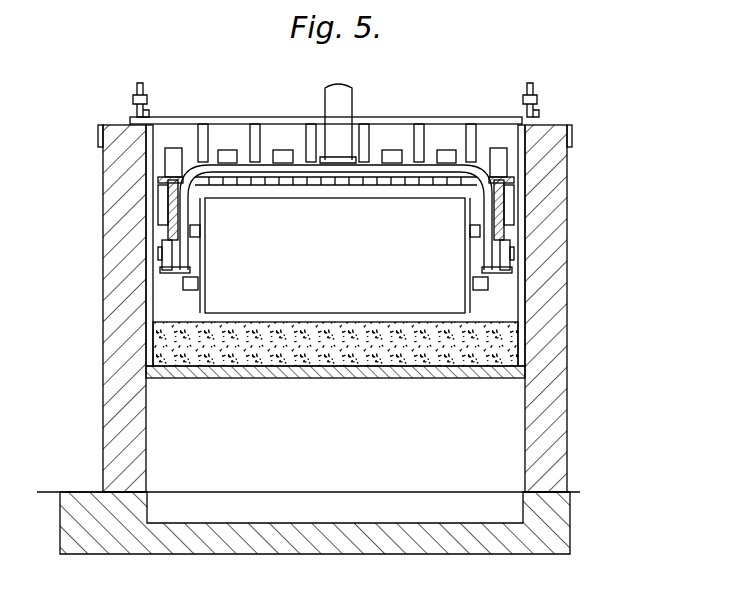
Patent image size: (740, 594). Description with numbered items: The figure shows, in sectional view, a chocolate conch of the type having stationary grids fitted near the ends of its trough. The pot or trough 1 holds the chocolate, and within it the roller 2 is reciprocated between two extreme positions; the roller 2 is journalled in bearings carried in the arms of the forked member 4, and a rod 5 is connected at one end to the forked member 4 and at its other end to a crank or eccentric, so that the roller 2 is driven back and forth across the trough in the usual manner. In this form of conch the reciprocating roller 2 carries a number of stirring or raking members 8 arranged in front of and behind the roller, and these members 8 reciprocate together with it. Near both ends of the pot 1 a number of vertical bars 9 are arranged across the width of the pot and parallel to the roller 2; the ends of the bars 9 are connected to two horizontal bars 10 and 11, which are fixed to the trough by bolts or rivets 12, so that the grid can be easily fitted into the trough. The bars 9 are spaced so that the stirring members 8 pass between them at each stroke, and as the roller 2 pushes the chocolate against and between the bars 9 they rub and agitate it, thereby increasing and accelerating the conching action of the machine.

The pot or trough 1 is at (308, 339).
The roller 2 is at (335, 255).
The forked member 4 is at (248, 165).
The rod 5 is at (343, 96).
The stirring or raking members 8 is at (283, 150).
The vertical bars 9 is at (474, 140).
The horizontal bar 10 is at (248, 117).
The horizontal bar 11 is at (481, 285).
The bolts or rivets 12 is at (146, 98).